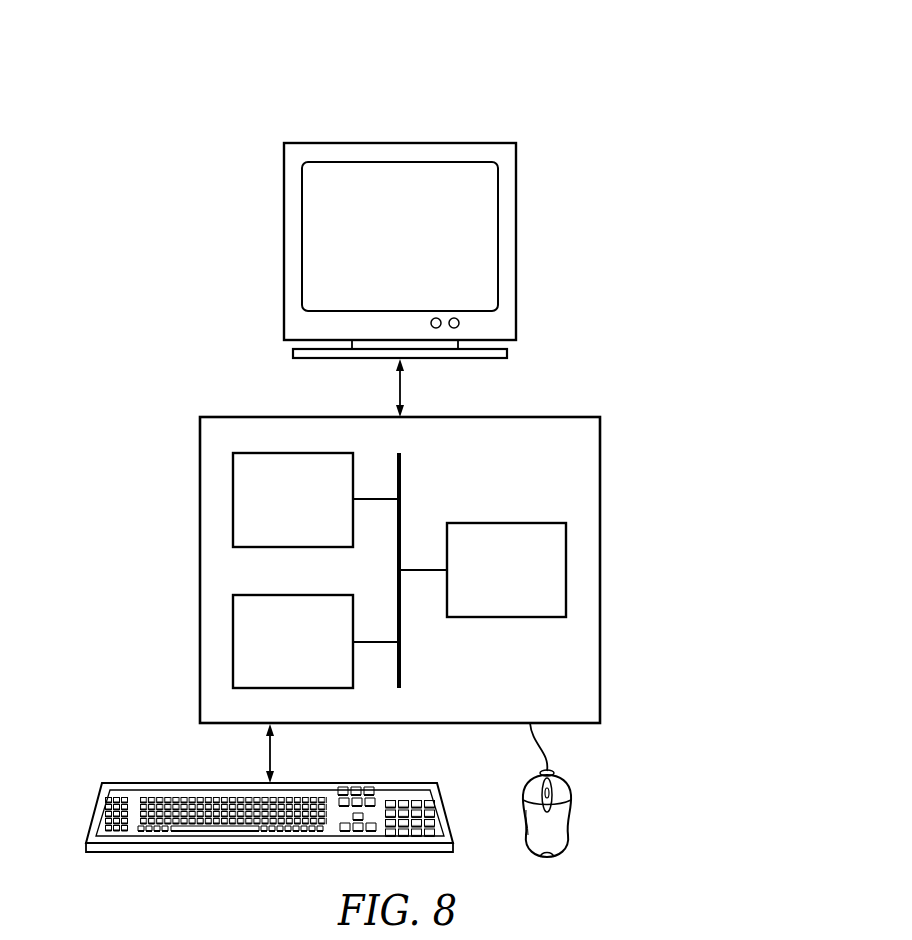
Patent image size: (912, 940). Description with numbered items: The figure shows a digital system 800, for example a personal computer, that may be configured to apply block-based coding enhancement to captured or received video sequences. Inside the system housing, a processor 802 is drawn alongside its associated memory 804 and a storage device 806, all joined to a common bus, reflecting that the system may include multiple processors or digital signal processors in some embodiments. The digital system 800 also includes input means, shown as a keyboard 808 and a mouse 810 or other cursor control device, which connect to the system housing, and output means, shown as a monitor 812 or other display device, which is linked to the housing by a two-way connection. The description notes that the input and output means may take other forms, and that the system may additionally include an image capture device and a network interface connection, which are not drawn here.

The digital system 800 is at (547, 58).
The processor 802 is at (526, 584).
The memory 804 is at (314, 514).
The storage device 806 is at (314, 656).
The keyboard 808 is at (92, 812).
The mouse 810 is at (573, 821).
The monitor 812 is at (382, 143).